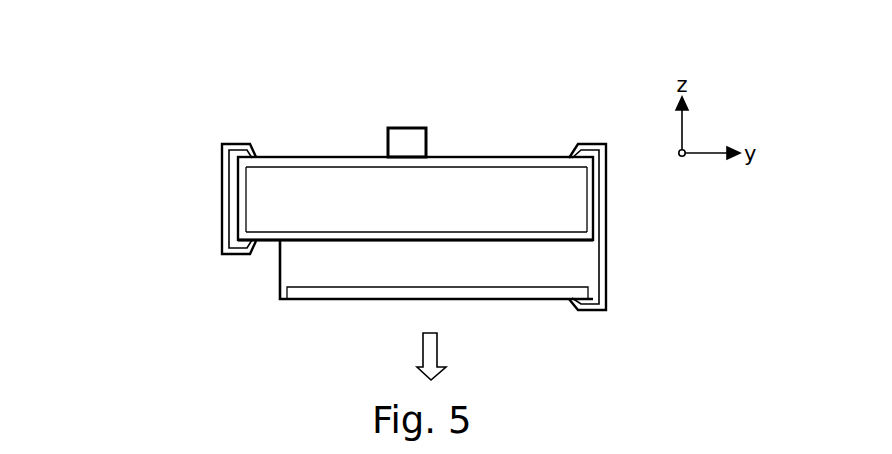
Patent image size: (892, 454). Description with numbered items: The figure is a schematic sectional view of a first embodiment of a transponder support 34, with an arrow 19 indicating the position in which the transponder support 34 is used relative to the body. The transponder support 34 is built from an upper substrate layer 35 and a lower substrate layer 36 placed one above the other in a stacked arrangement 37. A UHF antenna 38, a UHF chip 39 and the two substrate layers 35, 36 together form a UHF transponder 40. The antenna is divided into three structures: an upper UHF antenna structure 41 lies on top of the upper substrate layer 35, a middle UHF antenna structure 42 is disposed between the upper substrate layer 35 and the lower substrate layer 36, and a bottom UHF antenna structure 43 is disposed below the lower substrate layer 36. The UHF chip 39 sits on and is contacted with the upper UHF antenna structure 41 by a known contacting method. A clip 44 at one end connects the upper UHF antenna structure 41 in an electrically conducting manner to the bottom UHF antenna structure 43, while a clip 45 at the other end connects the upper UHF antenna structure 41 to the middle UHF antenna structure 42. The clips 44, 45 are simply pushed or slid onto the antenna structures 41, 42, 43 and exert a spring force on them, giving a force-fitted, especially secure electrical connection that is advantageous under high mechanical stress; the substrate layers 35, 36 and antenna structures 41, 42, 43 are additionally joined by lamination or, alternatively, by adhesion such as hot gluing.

The arrow 19 is at (433, 351).
The transponder support 34 is at (172, 110).
The upper substrate layer 35 is at (505, 183).
The lower substrate layer 36 is at (300, 262).
The stacked arrangement 37 is at (160, 250).
The UHF antenna 38 is at (452, 157).
The UHF chip 39 is at (407, 148).
The UHF transponder 40 is at (281, 110).
The upper UHF antenna structure 41 is at (305, 157).
The middle UHF antenna structure 42 is at (584, 236).
The bottom UHF antenna structure 43 is at (487, 292).
The clip 44 is at (575, 159).
The clip 45 is at (248, 240).